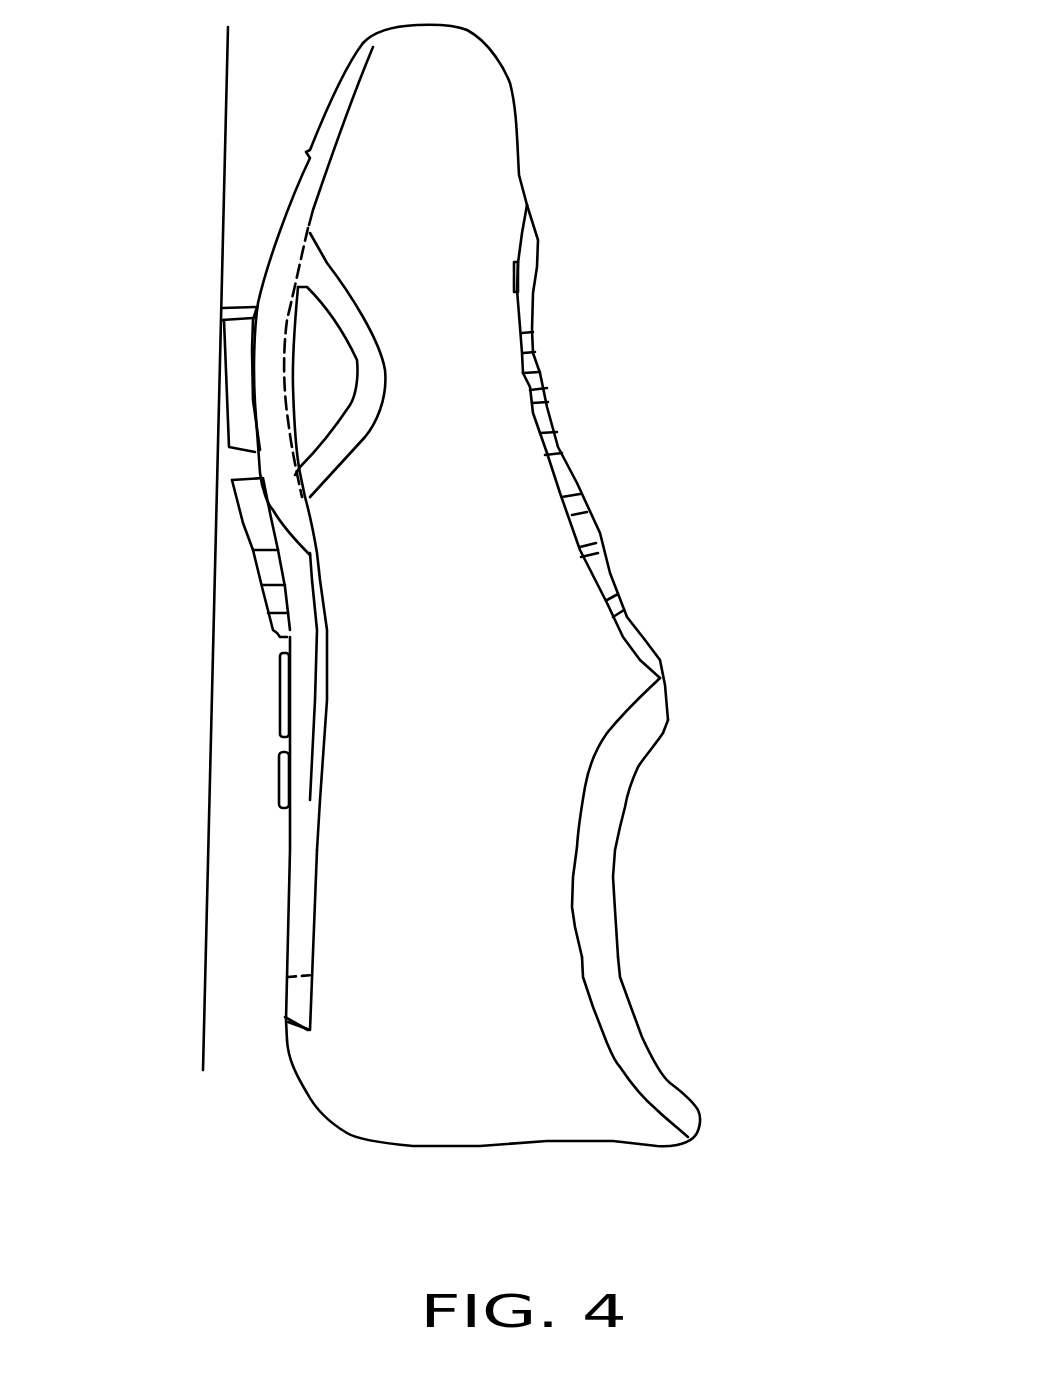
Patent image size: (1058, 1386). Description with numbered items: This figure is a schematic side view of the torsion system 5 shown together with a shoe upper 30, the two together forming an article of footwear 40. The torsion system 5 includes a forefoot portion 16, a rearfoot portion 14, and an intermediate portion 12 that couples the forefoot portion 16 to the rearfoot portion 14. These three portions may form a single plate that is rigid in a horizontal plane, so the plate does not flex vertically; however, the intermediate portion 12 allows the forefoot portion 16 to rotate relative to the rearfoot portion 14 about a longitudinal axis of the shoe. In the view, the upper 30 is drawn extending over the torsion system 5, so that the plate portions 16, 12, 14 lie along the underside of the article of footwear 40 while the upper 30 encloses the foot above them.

The torsion system 5 is at (286, 879).
The intermediate portion 12 is at (303, 672).
The rearfoot portion 14 is at (300, 950).
The forefoot portion 16 is at (273, 333).
The upper 30 is at (522, 828).
The article of footwear 40 is at (461, 1155).